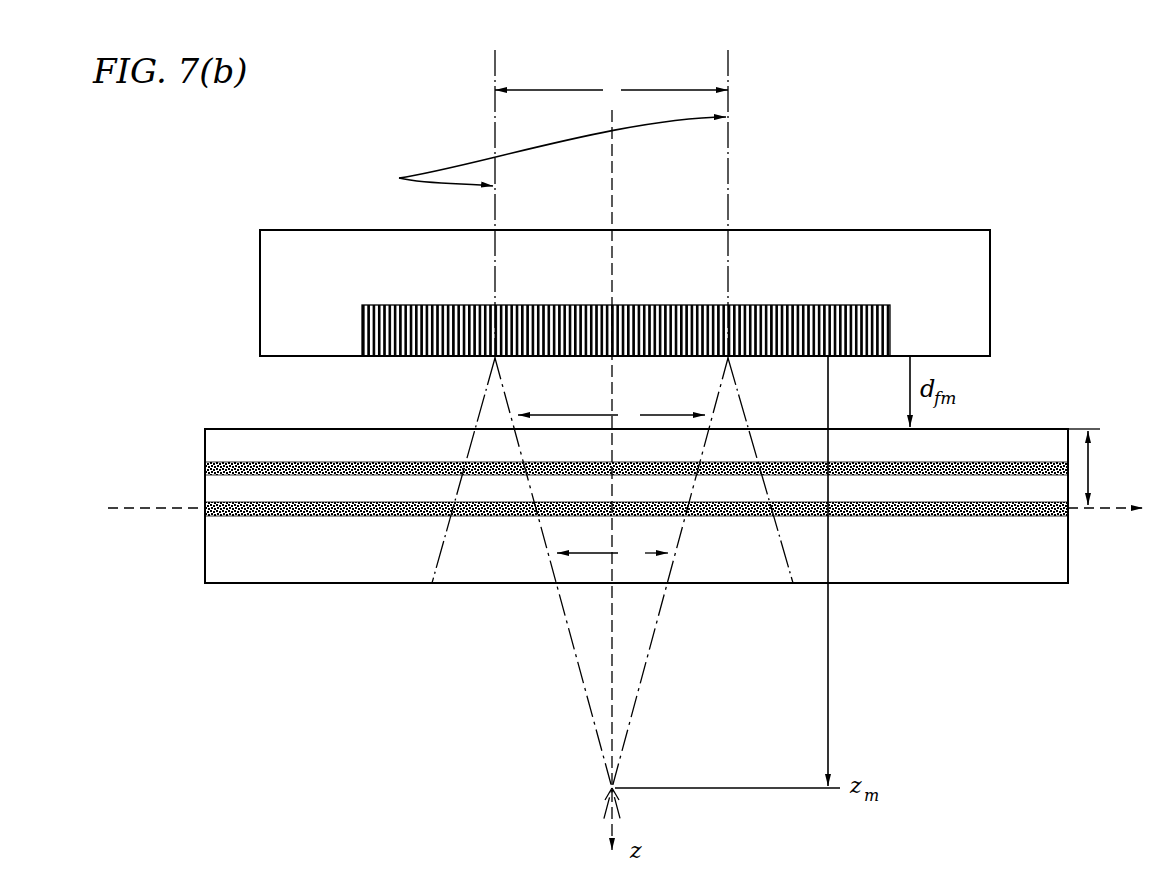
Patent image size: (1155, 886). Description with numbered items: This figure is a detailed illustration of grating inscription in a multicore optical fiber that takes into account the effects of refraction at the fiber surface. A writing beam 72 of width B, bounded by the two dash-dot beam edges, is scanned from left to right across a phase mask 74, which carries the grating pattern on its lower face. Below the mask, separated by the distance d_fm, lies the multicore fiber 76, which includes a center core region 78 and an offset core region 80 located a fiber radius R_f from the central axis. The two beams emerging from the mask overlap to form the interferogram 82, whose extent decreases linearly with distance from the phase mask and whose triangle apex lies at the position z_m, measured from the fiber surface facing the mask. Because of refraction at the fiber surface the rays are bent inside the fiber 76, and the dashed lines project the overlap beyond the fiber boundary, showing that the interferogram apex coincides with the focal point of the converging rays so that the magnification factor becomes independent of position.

The writing beam 72 is at (718, 150).
The phase mask 74 is at (260, 243).
The multicore fiber 76 is at (1068, 560).
The core region 78 is at (231, 516).
The core region 80 is at (203, 469).
The interferogram 82 is at (543, 375).